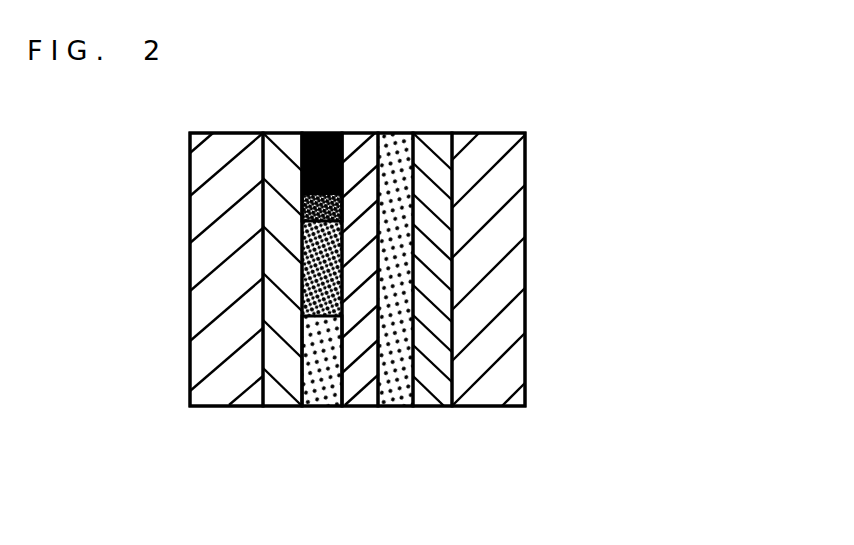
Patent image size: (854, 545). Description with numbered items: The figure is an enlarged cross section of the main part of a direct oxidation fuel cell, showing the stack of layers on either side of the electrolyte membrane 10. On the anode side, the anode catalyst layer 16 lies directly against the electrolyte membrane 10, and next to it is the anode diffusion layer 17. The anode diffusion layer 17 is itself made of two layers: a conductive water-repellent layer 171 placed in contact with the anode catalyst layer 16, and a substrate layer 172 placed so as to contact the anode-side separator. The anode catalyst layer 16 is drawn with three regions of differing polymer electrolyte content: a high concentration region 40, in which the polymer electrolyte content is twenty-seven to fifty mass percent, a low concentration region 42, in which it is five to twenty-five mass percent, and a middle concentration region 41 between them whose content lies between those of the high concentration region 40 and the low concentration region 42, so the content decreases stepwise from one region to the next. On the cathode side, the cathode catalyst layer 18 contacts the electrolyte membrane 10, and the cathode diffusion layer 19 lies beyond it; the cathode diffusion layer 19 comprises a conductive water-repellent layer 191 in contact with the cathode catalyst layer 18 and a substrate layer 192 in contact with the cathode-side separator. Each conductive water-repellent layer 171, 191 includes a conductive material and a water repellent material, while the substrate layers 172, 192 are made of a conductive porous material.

The electrolyte membrane 10 is at (356, 133).
The anode catalyst layer 16 is at (200, 269).
The anode diffusion layer 17 is at (231, 336).
The cathode catalyst layer 18 is at (400, 157).
The cathode diffusion layer 19 is at (475, 339).
The high concentration region 40 is at (305, 196).
The middle concentration region 41 is at (305, 264).
The low concentration region 42 is at (312, 355).
The conductive water-repellent layer 171 is at (276, 307).
The substrate layer 172 is at (221, 392).
The conductive water-repellent layer 191 is at (426, 388).
The substrate layer 192 is at (501, 312).